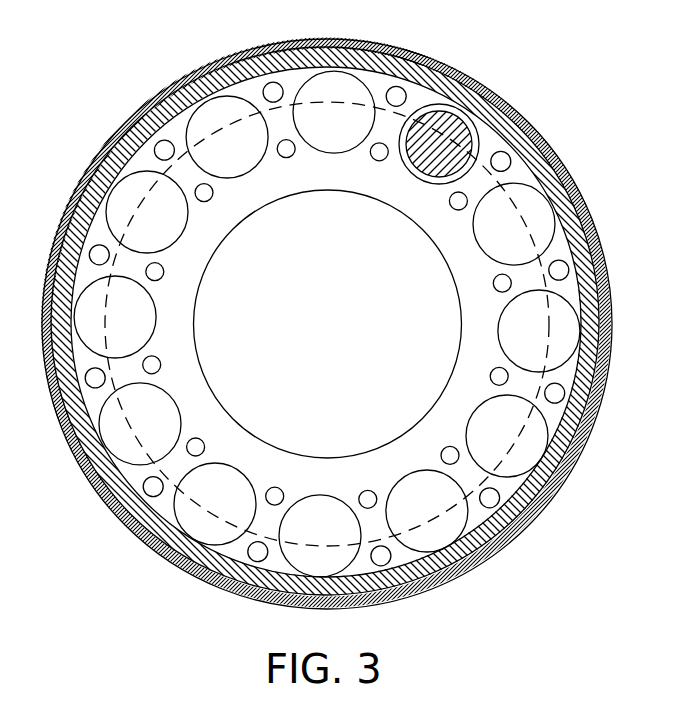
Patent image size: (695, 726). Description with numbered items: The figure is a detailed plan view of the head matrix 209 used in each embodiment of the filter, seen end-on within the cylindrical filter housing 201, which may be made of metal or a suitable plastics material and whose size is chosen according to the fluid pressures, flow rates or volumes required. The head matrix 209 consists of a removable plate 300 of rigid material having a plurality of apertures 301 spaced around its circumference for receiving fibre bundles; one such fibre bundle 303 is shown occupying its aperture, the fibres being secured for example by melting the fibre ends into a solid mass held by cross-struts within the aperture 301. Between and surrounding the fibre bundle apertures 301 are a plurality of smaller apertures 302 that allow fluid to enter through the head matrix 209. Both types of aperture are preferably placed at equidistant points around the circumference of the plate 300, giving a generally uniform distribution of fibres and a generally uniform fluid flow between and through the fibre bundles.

The filter housing 201 is at (613, 325).
The head matrix 209 is at (578, 130).
The removable plate 300 is at (100, 214).
The fibre bundle aperture 301 is at (556, 237).
The smaller aperture 302 is at (564, 396).
The fibre bundle 303 is at (449, 111).